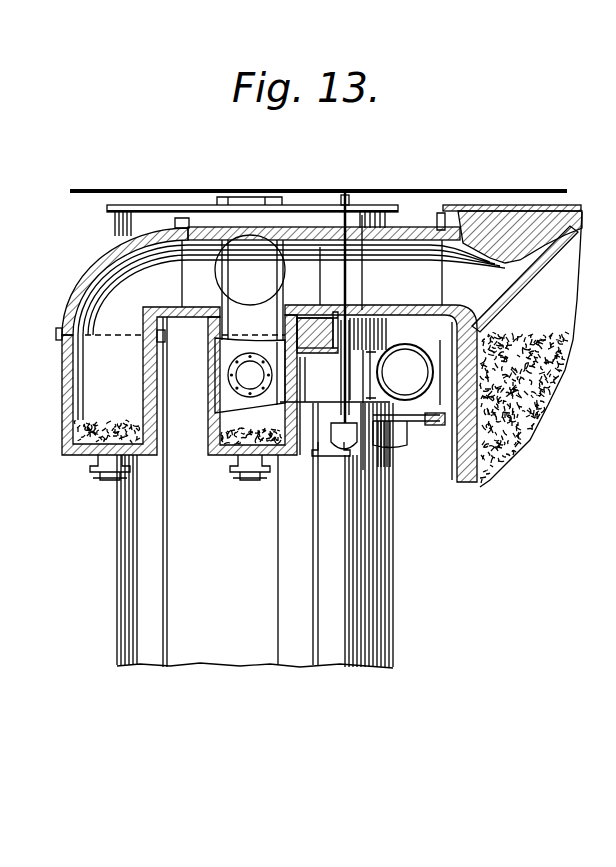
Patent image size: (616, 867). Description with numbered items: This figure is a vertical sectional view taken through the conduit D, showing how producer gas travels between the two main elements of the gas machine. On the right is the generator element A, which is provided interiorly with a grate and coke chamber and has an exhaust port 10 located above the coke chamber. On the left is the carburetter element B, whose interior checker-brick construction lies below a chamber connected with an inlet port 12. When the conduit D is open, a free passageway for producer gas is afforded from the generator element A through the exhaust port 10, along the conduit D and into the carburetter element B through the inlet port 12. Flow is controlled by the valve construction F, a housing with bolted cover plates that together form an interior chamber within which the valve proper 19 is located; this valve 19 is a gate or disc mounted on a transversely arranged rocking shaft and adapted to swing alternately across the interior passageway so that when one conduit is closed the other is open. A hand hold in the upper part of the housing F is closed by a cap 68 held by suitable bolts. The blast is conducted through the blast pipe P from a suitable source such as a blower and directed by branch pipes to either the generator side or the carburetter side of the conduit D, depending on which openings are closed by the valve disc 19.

The cap 68 is at (347, 190).
The exhaust port 10 is at (328, 262).
The inlet port 12 is at (250, 324).
The valve 19 is at (347, 378).
The conduit D is at (197, 322).
The valve housing F is at (331, 325).
The blast pipe P is at (397, 394).
The generator element A is at (471, 468).
The carburetter element B is at (255, 535).